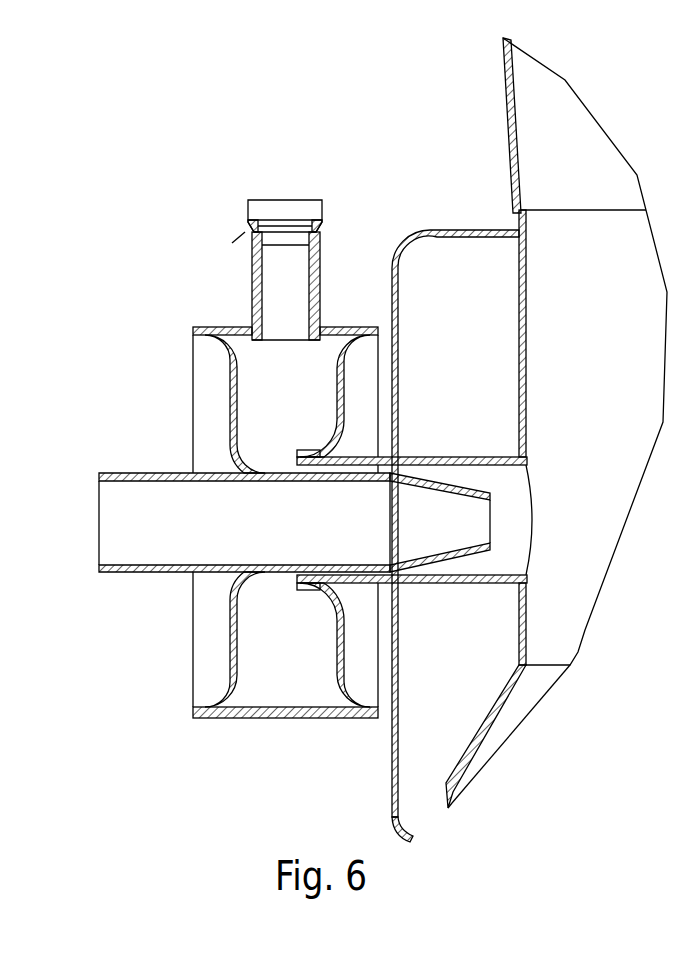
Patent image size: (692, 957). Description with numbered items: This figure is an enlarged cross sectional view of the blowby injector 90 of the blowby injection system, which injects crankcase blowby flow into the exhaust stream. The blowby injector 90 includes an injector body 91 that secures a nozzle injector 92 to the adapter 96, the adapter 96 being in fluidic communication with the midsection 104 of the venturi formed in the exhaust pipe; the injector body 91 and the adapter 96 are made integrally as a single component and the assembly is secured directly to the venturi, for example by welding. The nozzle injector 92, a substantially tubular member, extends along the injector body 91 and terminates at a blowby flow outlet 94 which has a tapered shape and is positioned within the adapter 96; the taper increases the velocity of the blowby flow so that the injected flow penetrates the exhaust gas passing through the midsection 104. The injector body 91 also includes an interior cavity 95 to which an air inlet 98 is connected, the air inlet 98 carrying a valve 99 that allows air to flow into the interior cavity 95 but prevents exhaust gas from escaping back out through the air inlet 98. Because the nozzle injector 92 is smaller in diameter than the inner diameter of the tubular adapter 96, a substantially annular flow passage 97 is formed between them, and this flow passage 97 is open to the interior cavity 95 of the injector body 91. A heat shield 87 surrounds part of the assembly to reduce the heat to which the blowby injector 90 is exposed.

The heat shield 87 is at (437, 228).
The blowby injector 90 is at (196, 198).
The injector body 91 is at (203, 325).
The nozzle injector 92 is at (137, 468).
The blowby flow outlet 94 is at (451, 524).
The interior cavity 95 is at (297, 408).
The adapter 96 is at (467, 450).
The flow passage 97 is at (476, 478).
The air inlet 98 is at (283, 196).
The valve 99 is at (263, 215).
The midsection 104 is at (623, 384).